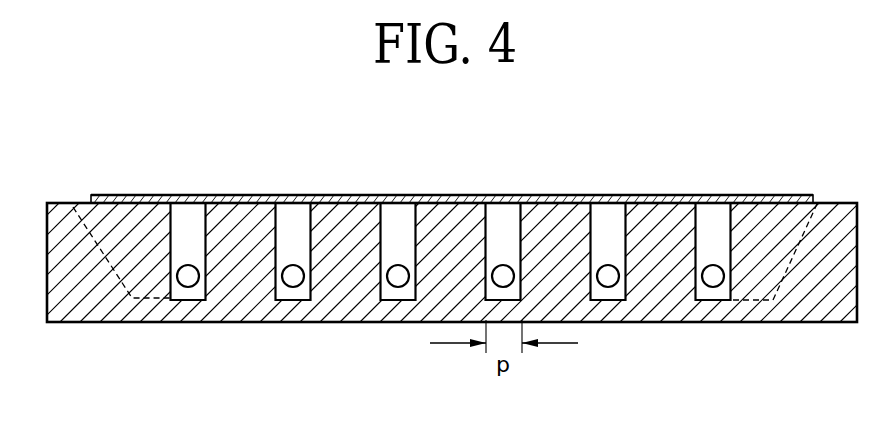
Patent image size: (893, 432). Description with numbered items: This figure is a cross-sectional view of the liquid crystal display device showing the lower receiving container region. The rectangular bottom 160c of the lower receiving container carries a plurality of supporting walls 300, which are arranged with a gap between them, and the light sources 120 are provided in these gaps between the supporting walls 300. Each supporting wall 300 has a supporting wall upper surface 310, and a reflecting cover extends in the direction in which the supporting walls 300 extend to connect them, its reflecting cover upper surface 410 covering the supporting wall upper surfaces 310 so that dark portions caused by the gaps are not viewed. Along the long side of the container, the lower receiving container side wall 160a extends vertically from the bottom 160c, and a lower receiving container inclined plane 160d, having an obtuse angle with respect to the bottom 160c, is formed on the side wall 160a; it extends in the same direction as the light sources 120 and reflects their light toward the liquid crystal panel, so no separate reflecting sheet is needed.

The supporting wall 300 is at (340, 292).
The reflecting cover upper surface 410 is at (147, 195).
The supporting wall upper surface 310 is at (239, 195).
The light source 120 is at (188, 287).
The lower receiving container side wall 160a is at (57, 201).
The bottom 160c is at (712, 302).
The lower receiving container inclined plane 160d is at (800, 253).